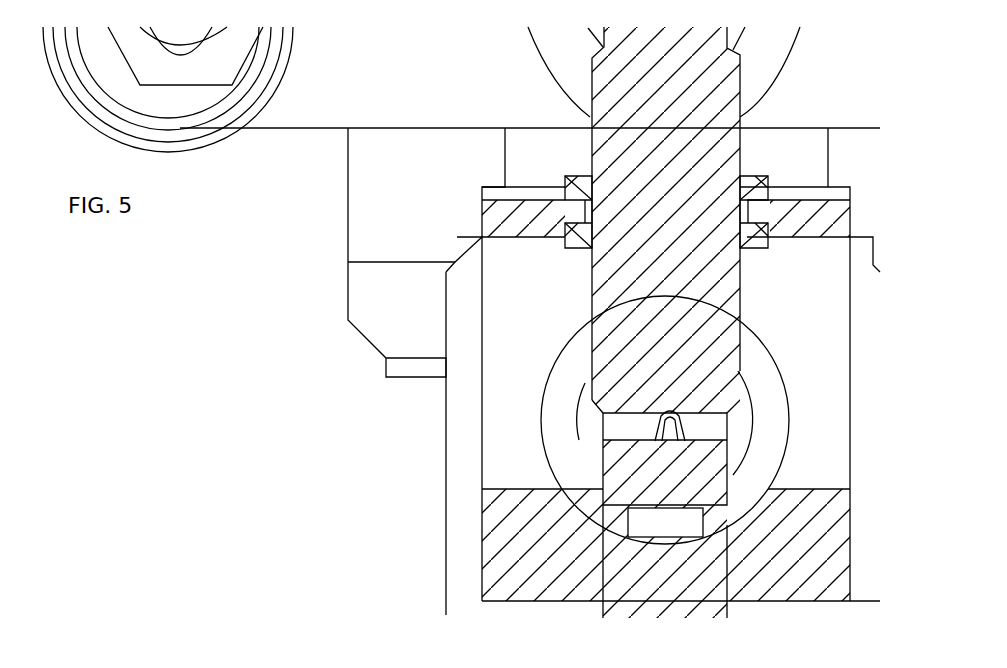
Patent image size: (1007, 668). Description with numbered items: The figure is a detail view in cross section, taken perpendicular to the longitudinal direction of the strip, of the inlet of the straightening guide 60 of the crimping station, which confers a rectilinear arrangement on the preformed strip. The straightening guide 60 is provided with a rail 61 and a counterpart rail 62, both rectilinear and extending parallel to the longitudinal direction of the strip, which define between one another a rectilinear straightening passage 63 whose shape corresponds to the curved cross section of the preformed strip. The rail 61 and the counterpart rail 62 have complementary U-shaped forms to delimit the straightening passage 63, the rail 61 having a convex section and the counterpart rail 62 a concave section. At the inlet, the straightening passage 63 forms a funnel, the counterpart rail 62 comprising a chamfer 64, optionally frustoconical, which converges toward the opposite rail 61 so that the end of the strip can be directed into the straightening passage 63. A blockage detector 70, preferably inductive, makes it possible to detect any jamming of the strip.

The straightening guide 60 is at (500, 417).
The rail 61 is at (605, 445).
The counterpart rail 62 is at (607, 414).
The straightening passage 63 is at (655, 425).
The chamfer 64 is at (610, 420).
The blockage detector 70 is at (665, 386).